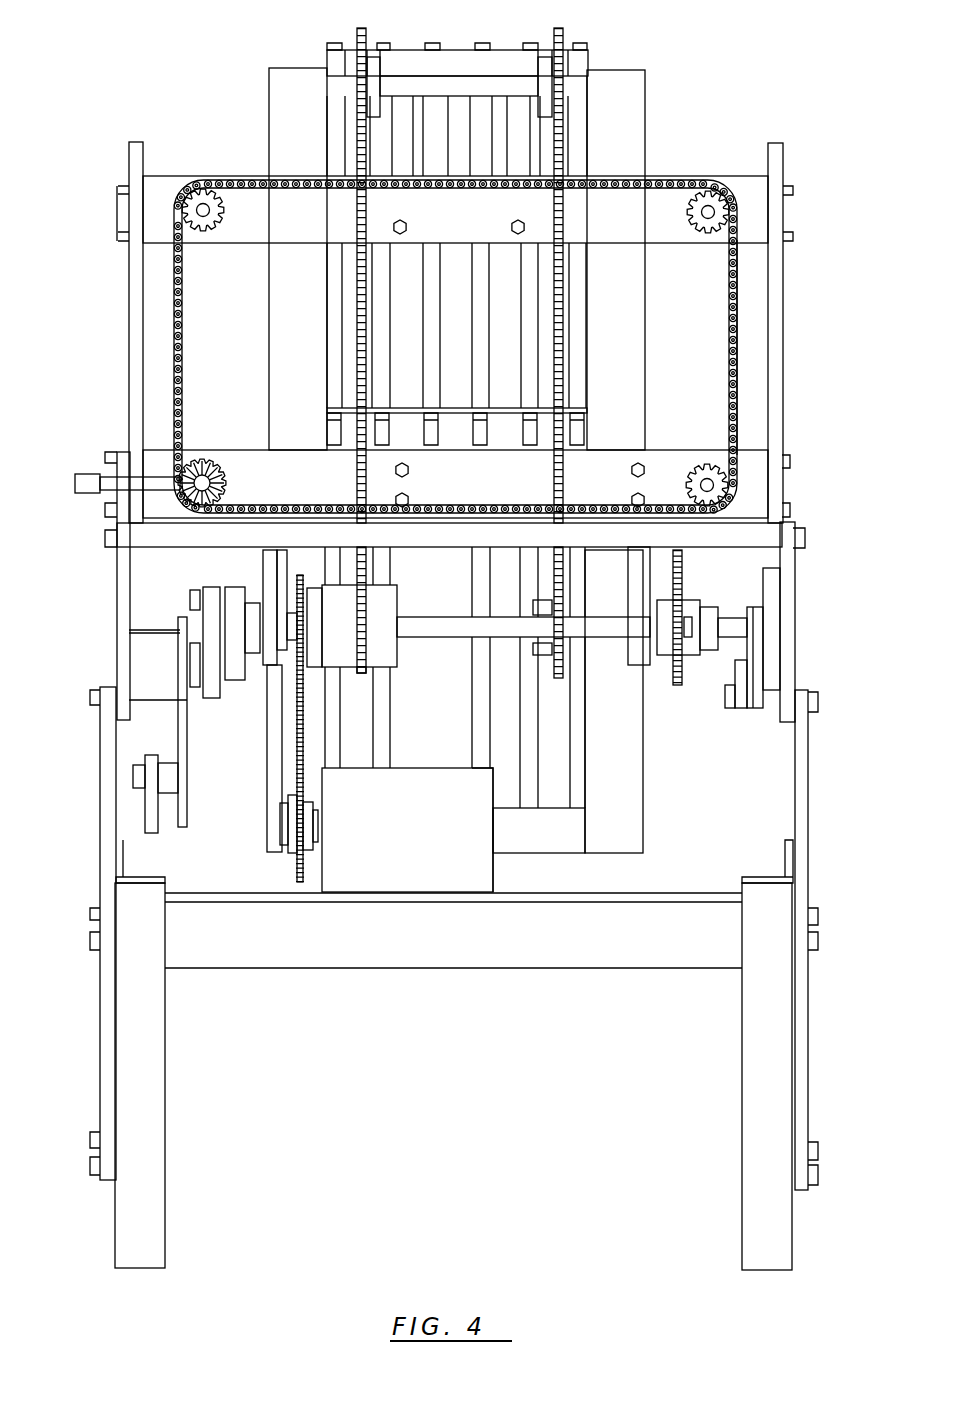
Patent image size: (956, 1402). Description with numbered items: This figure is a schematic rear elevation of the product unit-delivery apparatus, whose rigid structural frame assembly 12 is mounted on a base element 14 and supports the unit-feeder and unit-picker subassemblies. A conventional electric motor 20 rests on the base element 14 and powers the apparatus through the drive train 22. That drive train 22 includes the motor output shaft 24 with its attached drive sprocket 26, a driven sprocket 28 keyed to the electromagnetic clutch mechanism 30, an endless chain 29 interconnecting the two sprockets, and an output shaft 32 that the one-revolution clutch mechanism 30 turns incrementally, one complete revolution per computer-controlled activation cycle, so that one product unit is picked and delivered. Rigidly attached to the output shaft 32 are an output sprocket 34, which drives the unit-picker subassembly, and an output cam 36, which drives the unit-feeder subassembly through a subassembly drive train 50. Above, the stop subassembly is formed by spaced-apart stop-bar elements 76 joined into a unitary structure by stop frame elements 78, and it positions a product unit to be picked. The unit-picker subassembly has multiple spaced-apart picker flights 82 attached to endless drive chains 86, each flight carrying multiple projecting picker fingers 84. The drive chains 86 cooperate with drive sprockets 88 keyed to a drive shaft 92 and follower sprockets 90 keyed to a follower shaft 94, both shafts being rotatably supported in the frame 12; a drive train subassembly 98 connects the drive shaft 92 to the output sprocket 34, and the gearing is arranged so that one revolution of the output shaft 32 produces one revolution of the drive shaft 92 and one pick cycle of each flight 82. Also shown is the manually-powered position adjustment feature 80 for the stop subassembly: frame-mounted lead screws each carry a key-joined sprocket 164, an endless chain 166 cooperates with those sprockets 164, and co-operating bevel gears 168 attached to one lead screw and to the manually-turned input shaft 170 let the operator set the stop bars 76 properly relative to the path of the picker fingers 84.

The frame assembly 12 is at (100, 783).
The base element 14 is at (147, 1094).
The electric motor 20 is at (417, 834).
The drive train 22 is at (280, 880).
The output shaft 24 is at (309, 840).
The drive sprocket 26 is at (295, 864).
The driven sprocket 28 is at (297, 603).
The endless chain 29 is at (297, 750).
The electromagnetic clutch mechanism 30 is at (373, 631).
The output shaft 32 is at (598, 627).
The output sprocket 34 is at (684, 674).
The output cam 36 is at (237, 672).
The subassembly drive train 50 is at (190, 803).
The stop-bar elements 76 is at (453, 322).
The stop frame elements 78 is at (577, 80).
The position adjustment feature 80 is at (184, 312).
The picker flights 82 is at (558, 435).
The picker fingers 84 is at (378, 428).
The endless drive chains 86 is at (357, 142).
The drive sprockets 88 is at (370, 572).
The follower sprockets 90 is at (345, 60).
The drive shaft 92 is at (740, 628).
The follower shaft 94 is at (445, 80).
The drive train subassembly 98 is at (723, 603).
The sprocket 164 is at (217, 214).
The endless chain 166 is at (733, 318).
The bevel gears 168 is at (228, 497).
The input shaft 170 is at (105, 470).